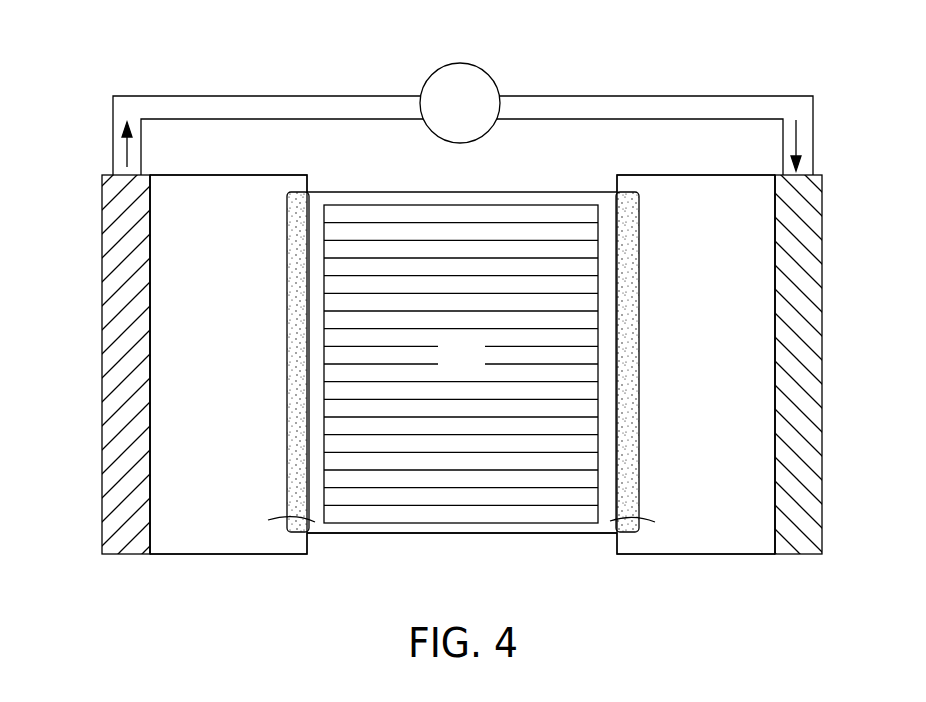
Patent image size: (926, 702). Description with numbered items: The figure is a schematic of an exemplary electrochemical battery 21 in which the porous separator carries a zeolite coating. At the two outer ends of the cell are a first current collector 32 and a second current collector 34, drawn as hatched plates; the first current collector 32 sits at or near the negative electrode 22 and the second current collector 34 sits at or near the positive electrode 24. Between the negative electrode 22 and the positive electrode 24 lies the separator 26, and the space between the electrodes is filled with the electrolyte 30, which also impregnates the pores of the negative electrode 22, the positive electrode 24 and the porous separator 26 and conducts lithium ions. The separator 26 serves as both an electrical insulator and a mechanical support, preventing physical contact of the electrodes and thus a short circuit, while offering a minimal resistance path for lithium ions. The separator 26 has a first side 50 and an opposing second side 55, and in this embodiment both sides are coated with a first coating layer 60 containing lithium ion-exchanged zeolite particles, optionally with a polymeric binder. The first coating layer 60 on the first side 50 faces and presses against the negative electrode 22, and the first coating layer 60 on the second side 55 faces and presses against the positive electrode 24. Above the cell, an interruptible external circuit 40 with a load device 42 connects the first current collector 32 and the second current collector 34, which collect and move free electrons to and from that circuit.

The battery 21 is at (138, 50).
The negative electrode 22 is at (209, 334).
The positive electrode 24 is at (682, 334).
The separator 26 is at (451, 535).
The electrolyte 30 is at (447, 361).
The first current collector 32 is at (102, 272).
The second current collector 34 is at (822, 272).
The external circuit 40 is at (222, 95).
The load device 42 is at (446, 114).
The first side 50 is at (315, 522).
The second side 55 is at (610, 521).
The first coating layer 60 is at (268, 520).